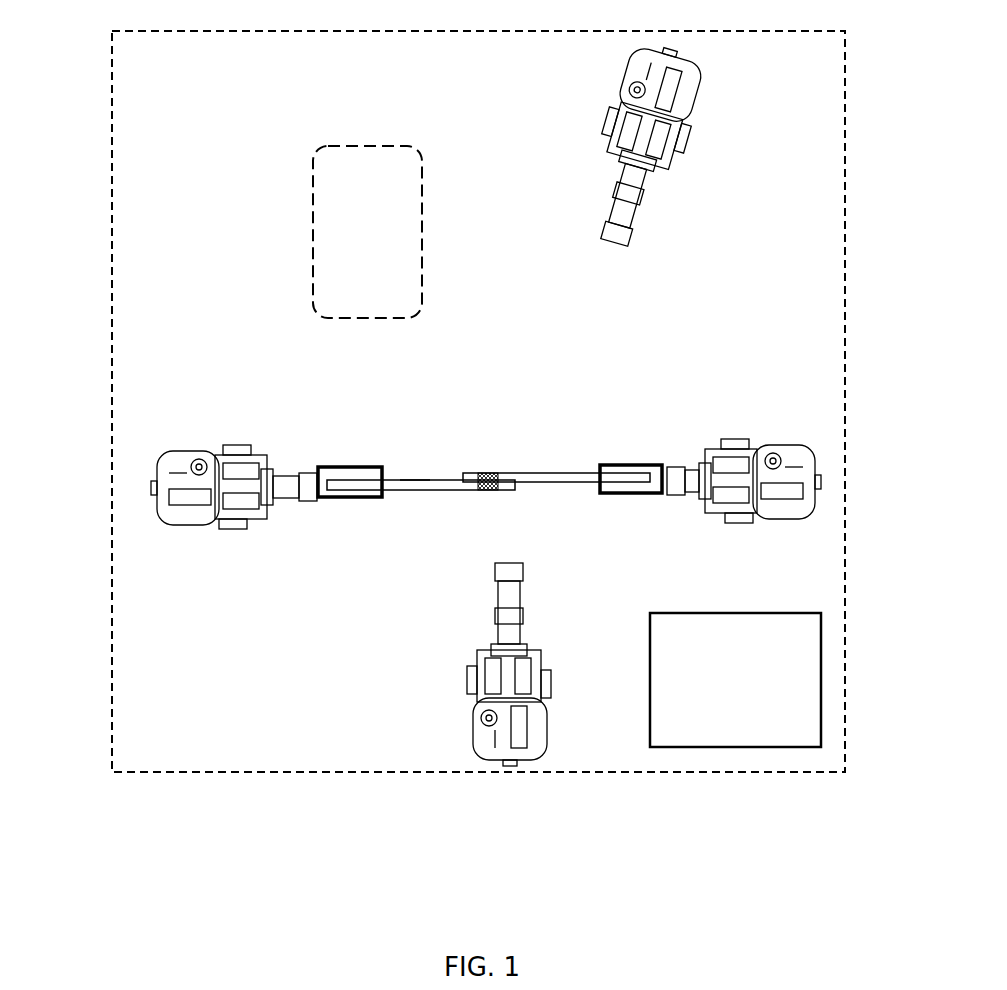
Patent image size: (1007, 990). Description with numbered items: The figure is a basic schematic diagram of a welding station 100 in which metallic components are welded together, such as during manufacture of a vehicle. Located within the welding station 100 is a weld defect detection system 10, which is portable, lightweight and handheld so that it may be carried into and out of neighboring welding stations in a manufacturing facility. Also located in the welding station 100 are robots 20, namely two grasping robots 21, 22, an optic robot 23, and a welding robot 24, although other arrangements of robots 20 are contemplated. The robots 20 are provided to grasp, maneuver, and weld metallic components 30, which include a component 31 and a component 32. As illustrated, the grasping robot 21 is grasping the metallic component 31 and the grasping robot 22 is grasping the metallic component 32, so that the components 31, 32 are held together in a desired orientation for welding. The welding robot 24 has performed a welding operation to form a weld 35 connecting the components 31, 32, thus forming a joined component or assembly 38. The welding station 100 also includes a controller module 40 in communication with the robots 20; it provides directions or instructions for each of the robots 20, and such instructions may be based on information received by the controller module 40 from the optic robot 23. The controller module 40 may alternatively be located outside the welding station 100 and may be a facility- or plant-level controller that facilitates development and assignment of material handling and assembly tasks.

The welding station 100 is at (112, 162).
The weld defect detection system 10 is at (384, 193).
The robots 20 is at (133, 457).
The grasping robot 21 is at (208, 470).
The grasping robot 22 is at (750, 455).
The optic robot 23 is at (660, 167).
The welding robot 24 is at (485, 747).
The metallic components 30 is at (490, 473).
The component 31 is at (427, 493).
The component 32 is at (552, 475).
The weld 35 is at (488, 475).
The joined component or assembly 38 is at (413, 437).
The controller module 40 is at (718, 690).